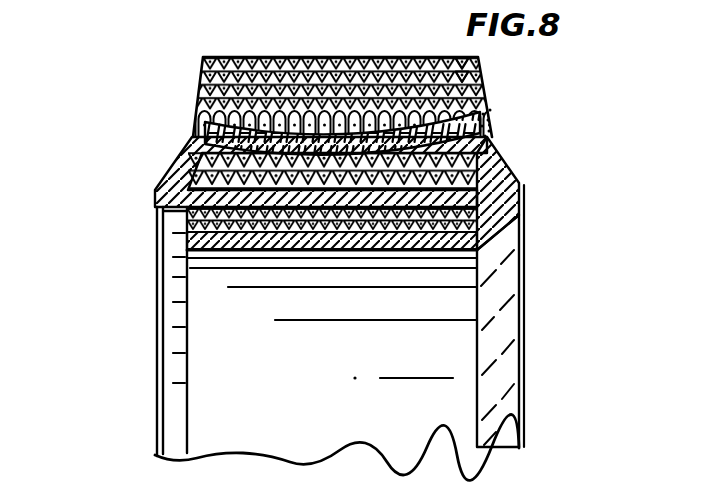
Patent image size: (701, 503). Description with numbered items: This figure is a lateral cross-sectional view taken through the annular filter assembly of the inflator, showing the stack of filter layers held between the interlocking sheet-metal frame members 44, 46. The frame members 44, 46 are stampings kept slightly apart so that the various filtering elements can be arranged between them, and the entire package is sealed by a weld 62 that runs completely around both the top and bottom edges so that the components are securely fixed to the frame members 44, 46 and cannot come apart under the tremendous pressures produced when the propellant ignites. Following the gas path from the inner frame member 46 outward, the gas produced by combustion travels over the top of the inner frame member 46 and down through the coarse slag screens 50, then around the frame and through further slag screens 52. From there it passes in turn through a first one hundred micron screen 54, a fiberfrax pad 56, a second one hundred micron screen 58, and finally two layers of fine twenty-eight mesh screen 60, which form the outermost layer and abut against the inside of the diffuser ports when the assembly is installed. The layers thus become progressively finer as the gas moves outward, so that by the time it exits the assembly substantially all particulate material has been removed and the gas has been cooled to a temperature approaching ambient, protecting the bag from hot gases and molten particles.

The frame member 44 is at (186, 281).
The inner frame member 46 is at (457, 292).
The slag screens 50 is at (447, 221).
The slag screens 52 is at (190, 171).
The first 100 micron screen 54 is at (196, 130).
The fiberfrax pad 56 is at (484, 117).
The second 100 micron screen 58 is at (207, 98).
The fine 28 mesh screen 60 is at (479, 84).
The weld 62 is at (484, 130).